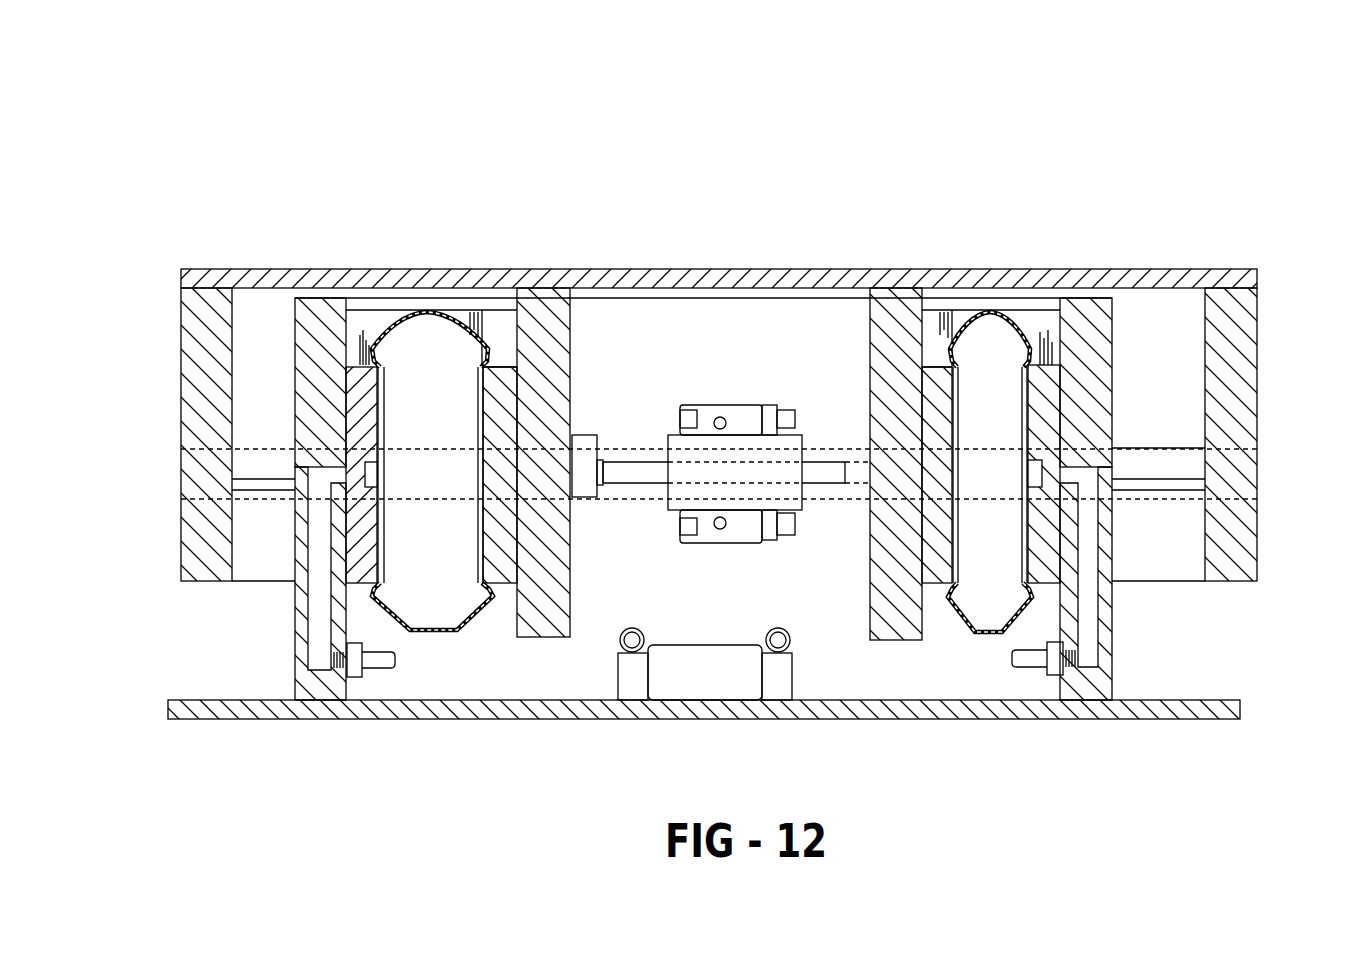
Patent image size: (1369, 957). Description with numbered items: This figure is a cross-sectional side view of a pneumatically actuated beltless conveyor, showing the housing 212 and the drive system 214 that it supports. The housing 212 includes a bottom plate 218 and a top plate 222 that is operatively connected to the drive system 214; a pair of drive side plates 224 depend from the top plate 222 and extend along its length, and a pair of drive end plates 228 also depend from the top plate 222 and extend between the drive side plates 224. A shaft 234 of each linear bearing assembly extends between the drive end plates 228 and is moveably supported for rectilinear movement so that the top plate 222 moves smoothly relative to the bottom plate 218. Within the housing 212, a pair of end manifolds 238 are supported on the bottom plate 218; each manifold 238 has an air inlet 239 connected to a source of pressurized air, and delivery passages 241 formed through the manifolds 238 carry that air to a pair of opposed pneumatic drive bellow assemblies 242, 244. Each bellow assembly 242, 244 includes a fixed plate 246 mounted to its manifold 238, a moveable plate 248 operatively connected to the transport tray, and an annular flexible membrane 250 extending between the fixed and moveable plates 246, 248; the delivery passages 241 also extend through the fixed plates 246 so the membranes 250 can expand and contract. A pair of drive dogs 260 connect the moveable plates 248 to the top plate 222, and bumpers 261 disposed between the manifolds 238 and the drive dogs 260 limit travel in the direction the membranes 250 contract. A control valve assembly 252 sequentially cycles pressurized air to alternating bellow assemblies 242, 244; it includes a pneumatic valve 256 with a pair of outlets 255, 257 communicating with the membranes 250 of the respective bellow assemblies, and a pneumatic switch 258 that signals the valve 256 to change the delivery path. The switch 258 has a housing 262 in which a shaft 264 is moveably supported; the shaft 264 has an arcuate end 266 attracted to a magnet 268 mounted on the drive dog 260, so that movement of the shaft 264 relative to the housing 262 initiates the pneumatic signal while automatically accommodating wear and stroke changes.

The housing 212 is at (1152, 177).
The drive system 214 is at (1143, 314).
The bottom plate 218 is at (207, 700).
The top plate 222 is at (780, 273).
The drive side plates 224 is at (1168, 568).
The drive end plates 228 is at (180, 368).
The shaft 234 is at (267, 460).
The end manifolds 238 is at (300, 323).
The air inlet 239 is at (377, 664).
The delivery passages 241 is at (315, 595).
The pneumatic drive bellow assembly 242 is at (441, 641).
The pneumatic drive bellow assembly 244 is at (953, 637).
The fixed plate 246 is at (372, 435).
The moveable plate 248 is at (492, 557).
The flexible membrane 250 is at (432, 316).
The control valve assembly 252 is at (703, 389).
The outlet 255 is at (618, 636).
The pneumatic valve 256 is at (685, 682).
The outlet 257 is at (780, 625).
The pneumatic switch 258 is at (743, 522).
The drive dogs 260 is at (570, 626).
The bumpers 261 is at (477, 318).
The switch housing 262 is at (768, 438).
The shaft 264 is at (823, 467).
The arcuate end 266 is at (600, 457).
The magnet 268 is at (578, 457).